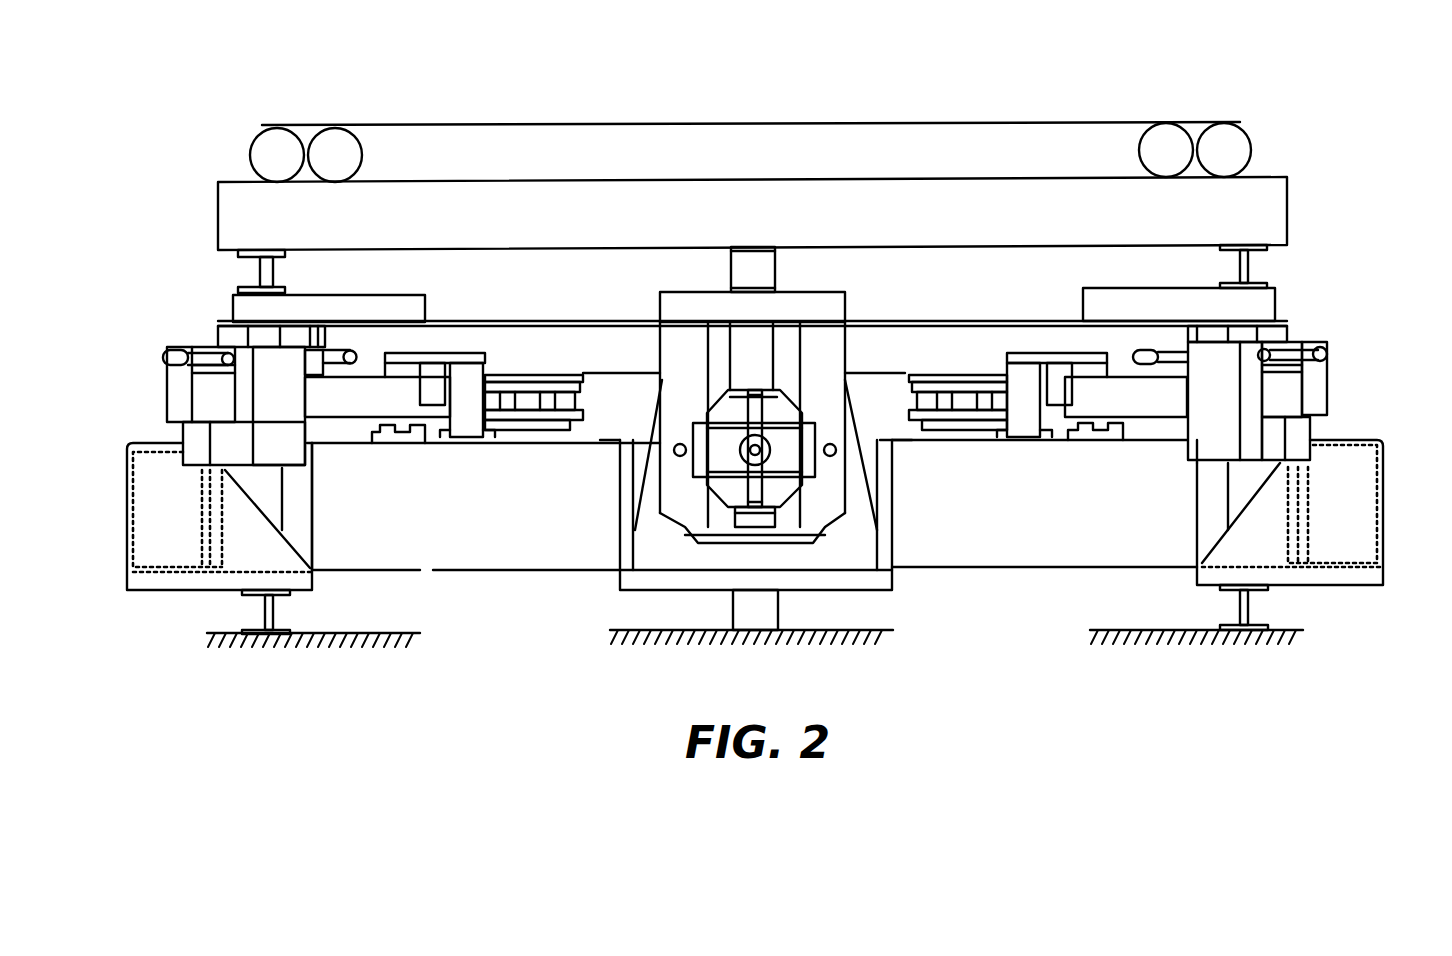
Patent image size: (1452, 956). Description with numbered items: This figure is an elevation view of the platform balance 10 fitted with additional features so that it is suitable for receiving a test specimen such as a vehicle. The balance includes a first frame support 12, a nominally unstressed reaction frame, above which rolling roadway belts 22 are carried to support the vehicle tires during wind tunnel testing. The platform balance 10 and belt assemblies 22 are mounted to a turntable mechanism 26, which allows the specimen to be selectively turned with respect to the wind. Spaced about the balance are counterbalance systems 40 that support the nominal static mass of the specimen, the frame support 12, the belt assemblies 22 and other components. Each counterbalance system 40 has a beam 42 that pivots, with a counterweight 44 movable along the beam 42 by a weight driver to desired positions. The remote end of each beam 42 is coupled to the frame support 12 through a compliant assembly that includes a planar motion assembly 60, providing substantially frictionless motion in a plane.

The platform balance 10 is at (1363, 250).
The first frame support 12 is at (952, 323).
The rolling roadway belts 22 is at (1235, 122).
The turntable mechanism 26 is at (1290, 185).
The counterbalance system 40 is at (152, 285).
The beam 42 is at (395, 420).
The counterweight 44 is at (275, 442).
The planar motion assembly 60 is at (585, 382).